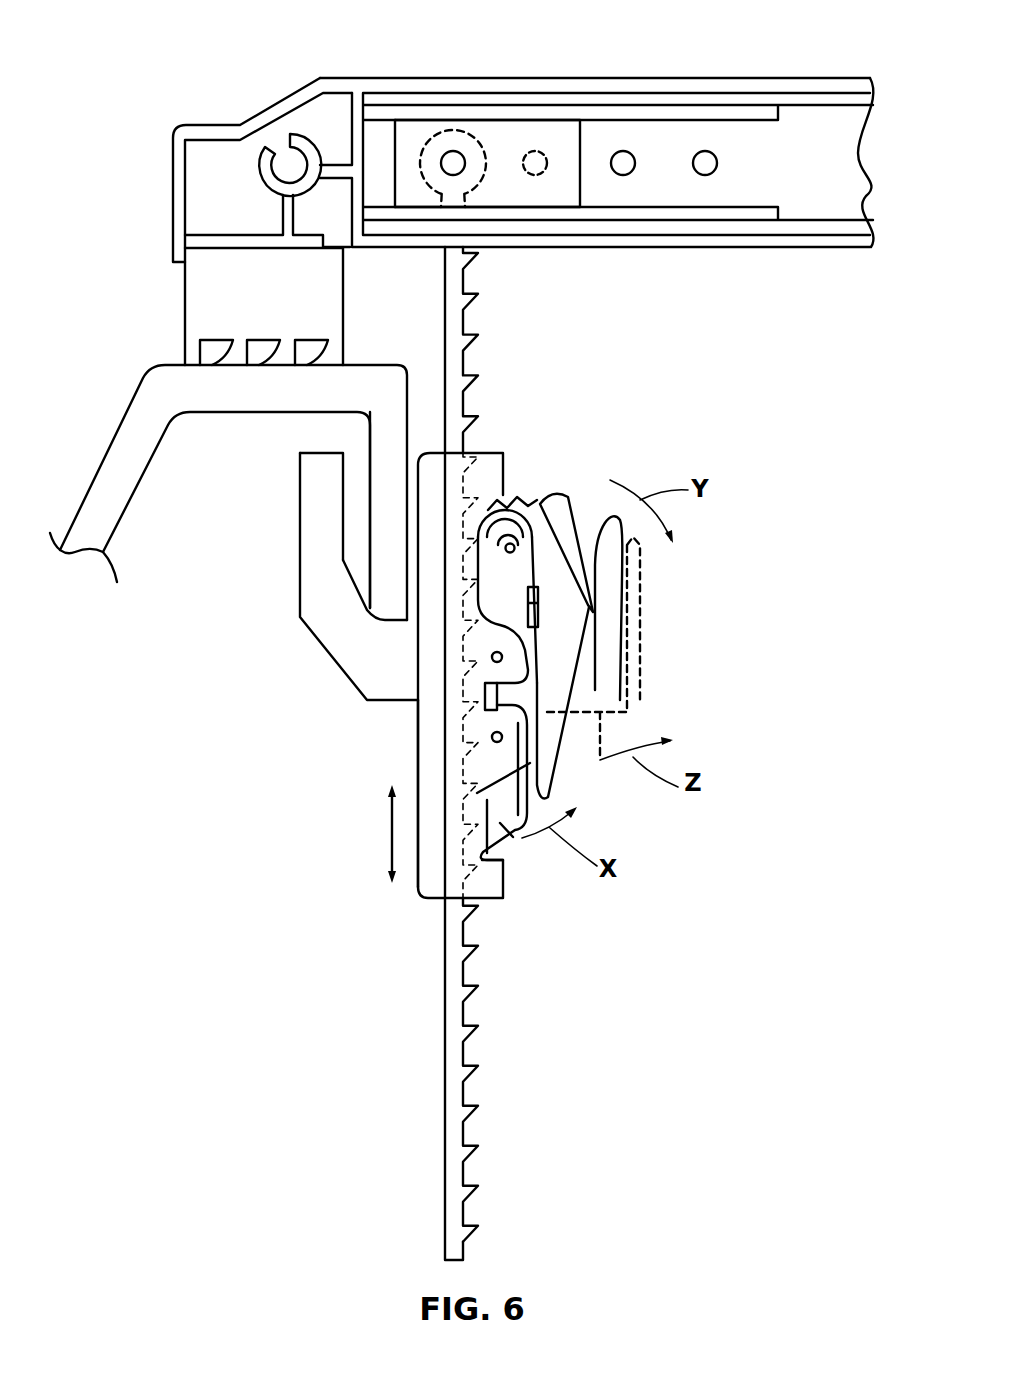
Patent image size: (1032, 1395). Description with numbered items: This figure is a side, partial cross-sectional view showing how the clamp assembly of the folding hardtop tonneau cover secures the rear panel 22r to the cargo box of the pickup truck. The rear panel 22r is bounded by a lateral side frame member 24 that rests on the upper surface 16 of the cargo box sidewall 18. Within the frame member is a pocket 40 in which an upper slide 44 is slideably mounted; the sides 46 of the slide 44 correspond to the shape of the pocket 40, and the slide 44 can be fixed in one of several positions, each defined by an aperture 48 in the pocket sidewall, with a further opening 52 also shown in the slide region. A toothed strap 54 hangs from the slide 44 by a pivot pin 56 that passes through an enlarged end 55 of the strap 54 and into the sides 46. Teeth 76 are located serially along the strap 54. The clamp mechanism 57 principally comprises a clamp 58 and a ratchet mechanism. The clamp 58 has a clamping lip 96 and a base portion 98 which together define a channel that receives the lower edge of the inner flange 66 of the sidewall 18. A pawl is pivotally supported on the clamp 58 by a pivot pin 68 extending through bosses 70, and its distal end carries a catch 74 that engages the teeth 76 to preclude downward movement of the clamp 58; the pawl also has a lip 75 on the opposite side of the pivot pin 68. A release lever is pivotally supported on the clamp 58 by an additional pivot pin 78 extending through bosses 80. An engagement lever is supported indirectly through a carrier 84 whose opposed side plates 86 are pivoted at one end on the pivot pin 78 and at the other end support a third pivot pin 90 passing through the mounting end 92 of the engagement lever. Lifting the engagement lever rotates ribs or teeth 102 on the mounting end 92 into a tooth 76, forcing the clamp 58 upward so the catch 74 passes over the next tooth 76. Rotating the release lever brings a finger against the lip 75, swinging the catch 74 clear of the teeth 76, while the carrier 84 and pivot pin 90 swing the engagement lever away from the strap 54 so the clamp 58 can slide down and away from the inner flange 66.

The rear panel 22r is at (797, 84).
The lateral side frame member 24 is at (277, 113).
The upper slide 44 is at (408, 140).
The enlarged end 55 is at (437, 133).
The pivot pin 56 is at (453, 153).
The hole 52 is at (538, 152).
The aperture 48 is at (702, 152).
The sides of the slide 46 is at (507, 188).
The pocket 40 is at (730, 214).
The upper surface 16 is at (183, 363).
The sidewall 18 is at (113, 458).
The toothed strap 54 is at (440, 1014).
The teeth 76 is at (476, 337).
The clamp 58 is at (326, 677).
The clamping lip 96 is at (320, 510).
The inner flange 66 is at (380, 483).
The base portion 98 is at (433, 720).
The third pivot pin 90 is at (510, 548).
The additional pivot pin 78 is at (497, 657).
The pivot pin 68 is at (492, 737).
The side plates 86 is at (520, 577).
The ribs or teeth 102 is at (505, 500).
The mounting end 92 is at (537, 510).
The carrier 84 is at (540, 597).
The bosses 80 is at (510, 660).
The lip 75 is at (604, 710).
The bosses 70 is at (510, 757).
The catch 74 is at (500, 827).
The clamp mechanism 57 is at (328, 845).